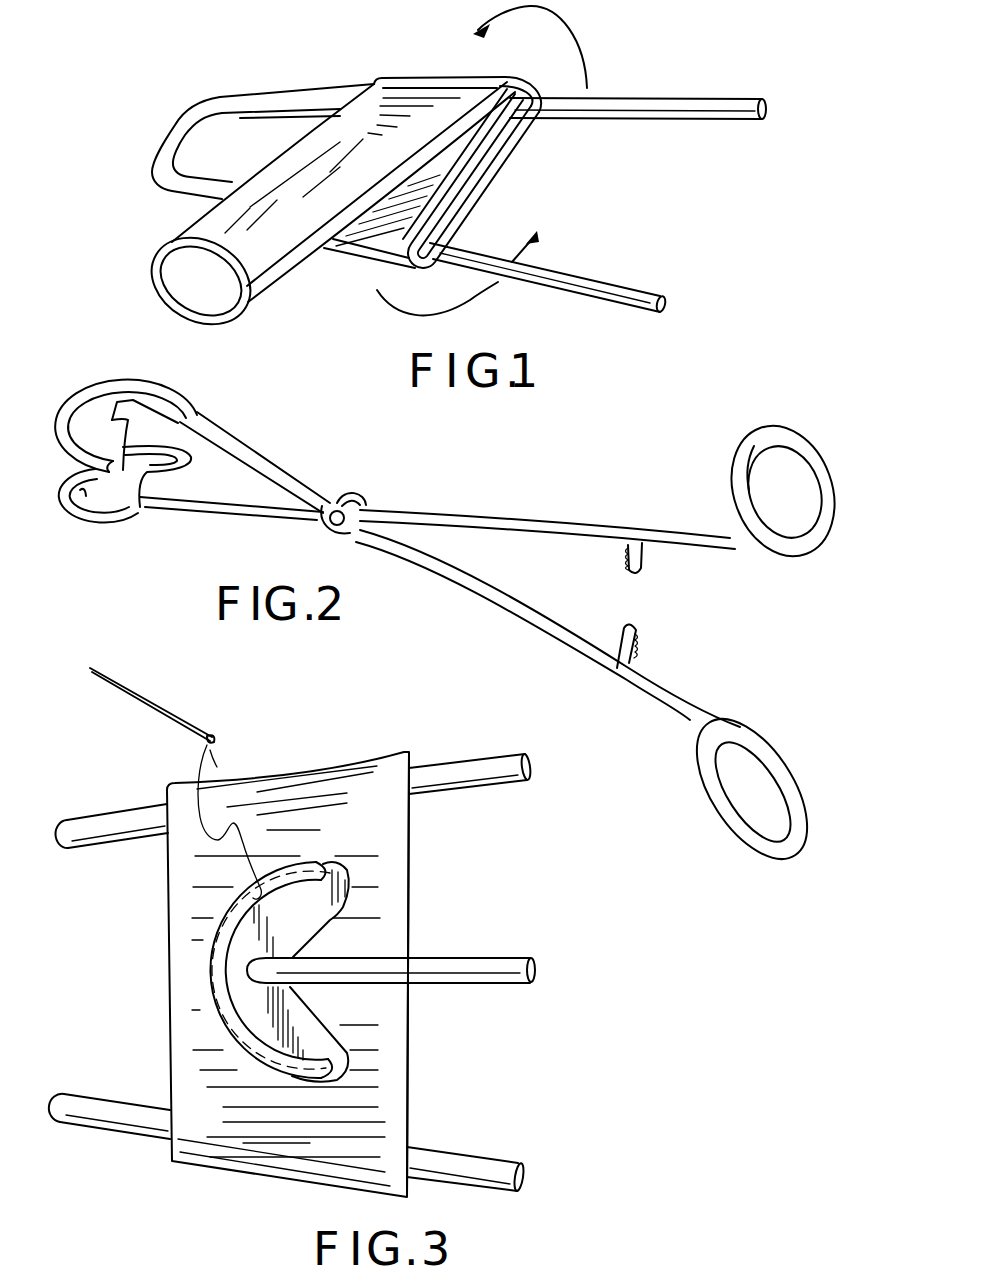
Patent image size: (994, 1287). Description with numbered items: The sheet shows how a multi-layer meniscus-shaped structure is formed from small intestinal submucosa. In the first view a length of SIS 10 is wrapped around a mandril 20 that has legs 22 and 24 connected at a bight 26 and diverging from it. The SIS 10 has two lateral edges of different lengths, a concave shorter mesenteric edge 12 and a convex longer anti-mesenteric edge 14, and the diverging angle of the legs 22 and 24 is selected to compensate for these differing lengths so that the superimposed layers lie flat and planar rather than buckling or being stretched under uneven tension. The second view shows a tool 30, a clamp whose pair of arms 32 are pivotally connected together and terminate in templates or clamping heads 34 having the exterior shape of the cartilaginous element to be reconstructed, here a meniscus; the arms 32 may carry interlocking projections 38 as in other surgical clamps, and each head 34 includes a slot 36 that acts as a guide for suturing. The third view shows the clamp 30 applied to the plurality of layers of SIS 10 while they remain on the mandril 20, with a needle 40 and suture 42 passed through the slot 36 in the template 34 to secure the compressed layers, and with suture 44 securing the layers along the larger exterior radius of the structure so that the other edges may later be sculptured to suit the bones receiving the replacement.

In FIG. 1, the length of SIS 10 is at (210, 232).
In FIG. 1, the mesenteric edge 12 is at (303, 138).
In FIG. 3, the mesenteric edge 12 is at (165, 903).
In FIG. 1, the anti-mesenteric edge 14 is at (417, 175).
In FIG. 3, the anti-mesenteric edge 14 is at (410, 920).
In FIG. 1, the mandril 20 is at (151, 119).
In FIG. 1, the leg 22 is at (723, 101).
In FIG. 3, the leg 22 is at (480, 760).
In FIG. 1, the leg 24 is at (580, 288).
In FIG. 3, the leg 24 is at (480, 1160).
In FIG. 1, the bight 26 is at (192, 108).
In FIG. 2, the tool 30 is at (592, 506).
In FIG. 2, the arm 32 is at (688, 537).
In FIG. 3, the arm 32 is at (507, 963).
In FIG. 2, the clamping head 34 is at (197, 412).
In FIG. 3, the clamping head 34 is at (320, 1034).
In FIG. 2, the slot 36 is at (80, 397).
In FIG. 3, the slot 36 is at (323, 862).
In FIG. 2, the interlocking projection 38 is at (645, 572).
In FIG. 3, the needle 40 is at (193, 722).
In FIG. 3, the suture 42 is at (200, 766).
In FIG. 3, the suture 44 is at (221, 1005).